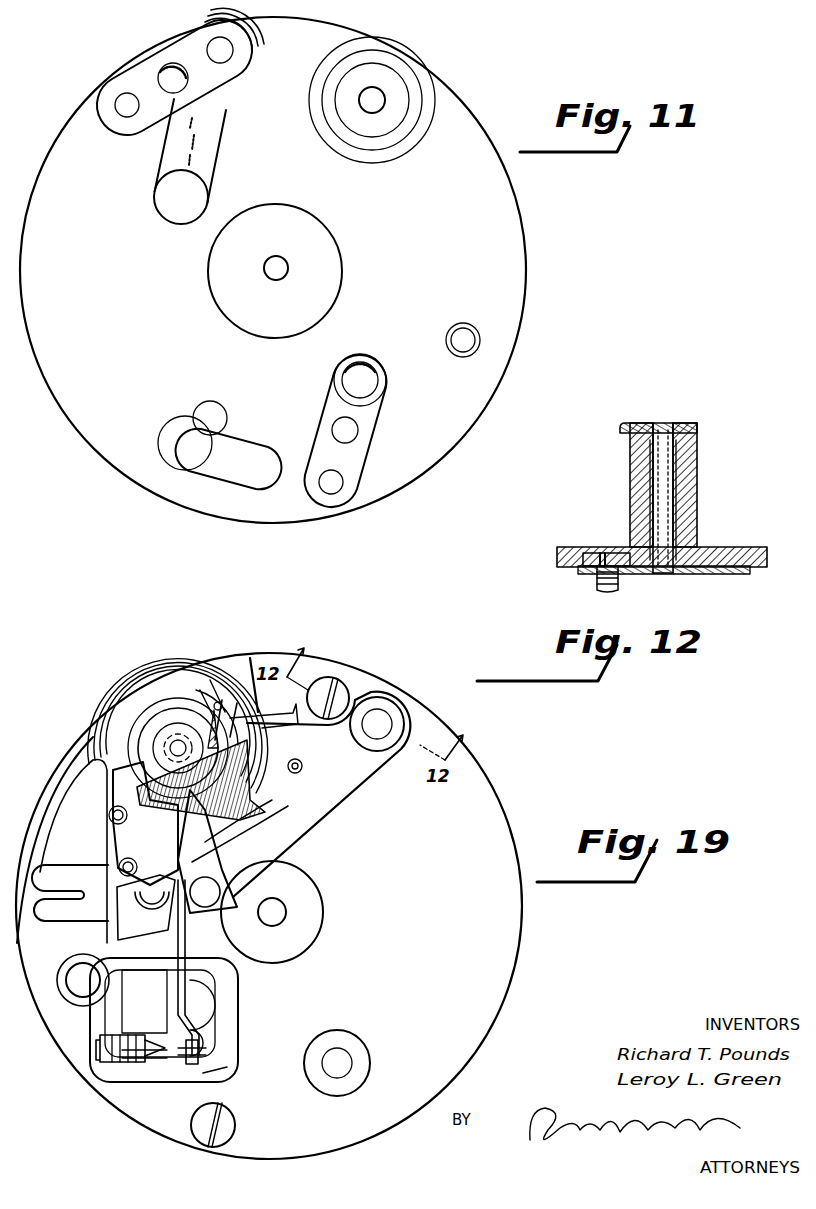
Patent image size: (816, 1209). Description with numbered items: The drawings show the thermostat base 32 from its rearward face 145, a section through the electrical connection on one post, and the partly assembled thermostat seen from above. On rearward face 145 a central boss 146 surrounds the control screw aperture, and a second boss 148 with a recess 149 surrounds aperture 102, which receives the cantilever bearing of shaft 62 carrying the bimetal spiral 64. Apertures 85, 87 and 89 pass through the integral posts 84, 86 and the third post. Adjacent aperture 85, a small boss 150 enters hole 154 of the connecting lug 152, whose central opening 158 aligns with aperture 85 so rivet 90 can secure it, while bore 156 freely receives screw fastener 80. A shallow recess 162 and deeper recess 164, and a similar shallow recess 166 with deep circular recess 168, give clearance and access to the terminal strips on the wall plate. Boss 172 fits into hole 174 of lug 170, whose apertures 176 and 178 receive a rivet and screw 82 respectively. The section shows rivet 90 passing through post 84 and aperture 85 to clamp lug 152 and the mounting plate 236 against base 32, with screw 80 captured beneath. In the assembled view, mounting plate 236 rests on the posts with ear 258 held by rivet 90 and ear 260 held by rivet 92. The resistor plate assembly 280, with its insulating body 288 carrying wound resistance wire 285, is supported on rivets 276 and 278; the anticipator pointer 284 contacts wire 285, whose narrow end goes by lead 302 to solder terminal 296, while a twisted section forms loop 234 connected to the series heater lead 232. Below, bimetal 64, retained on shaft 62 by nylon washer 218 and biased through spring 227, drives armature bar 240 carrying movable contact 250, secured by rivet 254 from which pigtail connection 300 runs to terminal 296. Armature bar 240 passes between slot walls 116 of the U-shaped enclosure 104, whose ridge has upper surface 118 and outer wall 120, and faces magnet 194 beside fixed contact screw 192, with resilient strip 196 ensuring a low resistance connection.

In FIG. 11, the base 32 is at (471, 89).
In FIG. 12, the base 32 is at (705, 548).
In FIG. 19, the base 32 is at (497, 830).
In FIG. 11, the rearward face 145 is at (510, 200).
In FIG. 11, the central boss 146 is at (336, 250).
In FIG. 11, the thin resilient strip 196 is at (271, 280).
In FIG. 19, the thin resilient strip 196 is at (145, 1048).
In FIG. 11, the second boss 148 is at (410, 80).
In FIG. 11, the recess 149 is at (392, 112).
In FIG. 11, the aperture 102 is at (370, 110).
In FIG. 11, the electrical connecting lug 152 is at (141, 62).
In FIG. 12, the electrical connecting lug 152 is at (680, 574).
In FIG. 11, the spring 227 is at (207, 22).
In FIG. 19, the spring 227 is at (220, 672).
In FIG. 11, the small boss 150 is at (115, 100).
In FIG. 12, the small boss 150 is at (712, 570).
In FIG. 11, the hole 154 is at (123, 117).
In FIG. 11, the third opening 158 is at (165, 90).
In FIG. 11, the second bore 156 is at (232, 48).
In FIG. 11, the through aperture 85 is at (185, 78).
In FIG. 12, the through aperture 85 is at (676, 502).
In FIG. 11, the shallow recess 162 is at (218, 152).
In FIG. 11, the deeper recess 164 is at (178, 220).
In FIG. 11, the lug 170 is at (362, 455).
In FIG. 11, the aperture 176 is at (372, 376).
In FIG. 11, the boss 172 is at (358, 432).
In FIG. 11, the hole 174 is at (333, 428).
In FIG. 11, the aperture 178 is at (332, 492).
In FIG. 11, the shallow recess 166 is at (240, 445).
In FIG. 11, the deep circular recess 168 is at (185, 418).
In FIG. 11, the through bore 87 is at (210, 404).
In FIG. 11, the through aperture 89 is at (466, 330).
In FIG. 12, the post 84 is at (697, 450).
In FIG. 12, the rivet 90 is at (675, 423).
In FIG. 19, the rivet 90 is at (392, 732).
In FIG. 12, the mounting plate 236 is at (624, 423).
In FIG. 19, the mounting plate 236 is at (360, 787).
In FIG. 12, the screw fastener 80 is at (597, 580).
In FIG. 19, the screw fastener 80 is at (340, 690).
In FIG. 19, the U-shaped enclosure 104 is at (256, 978).
In FIG. 19, the post 86 is at (352, 1094).
In FIG. 19, the screw 82 is at (198, 1130).
In FIG. 19, the ear 258 is at (401, 706).
In FIG. 19, the resistor plate assembly 280 is at (300, 826).
In FIG. 19, the bimetal spiral 64 is at (125, 672).
In FIG. 19, the nylon washer 218 is at (168, 724).
In FIG. 19, the loop 234 is at (224, 700).
In FIG. 19, the electrical lead 232 is at (246, 700).
In FIG. 19, the thin flat body 288 is at (282, 720).
In FIG. 19, the rivet 276 is at (303, 760).
In FIG. 19, the resistance wire 285 is at (240, 778).
In FIG. 19, the anticipator pointer 284 is at (213, 846).
In FIG. 19, the shaft 62 is at (145, 823).
In FIG. 19, the lead 302 is at (168, 842).
In FIG. 19, the rivet 278 is at (113, 824).
In FIG. 19, the solder terminal 296 is at (118, 870).
In FIG. 19, the electrical pigtail connection 300 is at (110, 903).
In FIG. 19, the ear 260 is at (50, 975).
In FIG. 19, the rivet 254 is at (168, 912).
In FIG. 19, the slot side walls 116 is at (186, 945).
In FIG. 19, the upper surface of ridge 118 is at (225, 1066).
In FIG. 19, the armature bar 240 is at (230, 988).
In FIG. 19, the magnet 194 is at (144, 1001).
In FIG. 19, the fixed contact screw 192 is at (148, 1062).
In FIG. 19, the movable contact member 250 is at (190, 1066).
In FIG. 19, the outer wall of ridge 120 is at (205, 1085).
In FIG. 19, the rivet 92 is at (75, 1000).